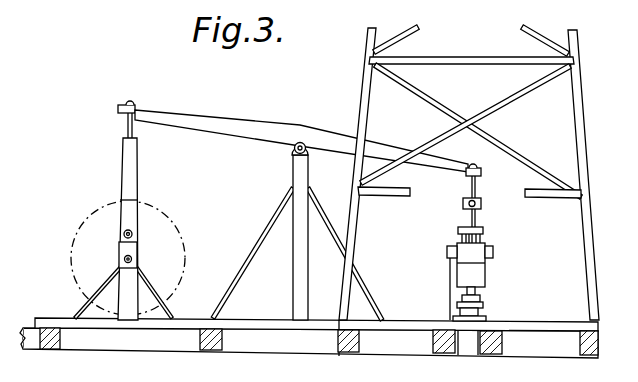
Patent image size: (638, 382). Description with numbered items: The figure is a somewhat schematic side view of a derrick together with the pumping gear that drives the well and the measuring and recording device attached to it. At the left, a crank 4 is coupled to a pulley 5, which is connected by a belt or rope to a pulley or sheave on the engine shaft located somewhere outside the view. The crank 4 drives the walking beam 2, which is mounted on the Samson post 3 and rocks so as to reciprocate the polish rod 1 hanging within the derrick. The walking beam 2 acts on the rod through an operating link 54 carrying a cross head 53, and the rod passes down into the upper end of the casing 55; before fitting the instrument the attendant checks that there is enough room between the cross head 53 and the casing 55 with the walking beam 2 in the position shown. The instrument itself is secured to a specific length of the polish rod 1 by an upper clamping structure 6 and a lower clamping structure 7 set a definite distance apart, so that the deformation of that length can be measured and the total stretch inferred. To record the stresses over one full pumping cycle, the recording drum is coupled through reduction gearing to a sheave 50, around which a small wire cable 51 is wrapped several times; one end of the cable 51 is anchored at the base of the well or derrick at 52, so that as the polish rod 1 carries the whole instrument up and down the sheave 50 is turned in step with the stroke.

The polish rod 1 is at (476, 218).
The walking beam 2 is at (233, 141).
The Samson post 3 is at (292, 263).
The crank 4 is at (118, 252).
The pulley 5 is at (82, 224).
The upper clamping structure 6 is at (458, 230).
The lower clamping structure 7 is at (475, 272).
The sheave 50 is at (447, 262).
The wire cable 51 is at (449, 277).
The base of the well or derrick 52 is at (445, 318).
The cross head 53 is at (481, 203).
The operating link 54 is at (471, 188).
The casing 55 is at (481, 300).